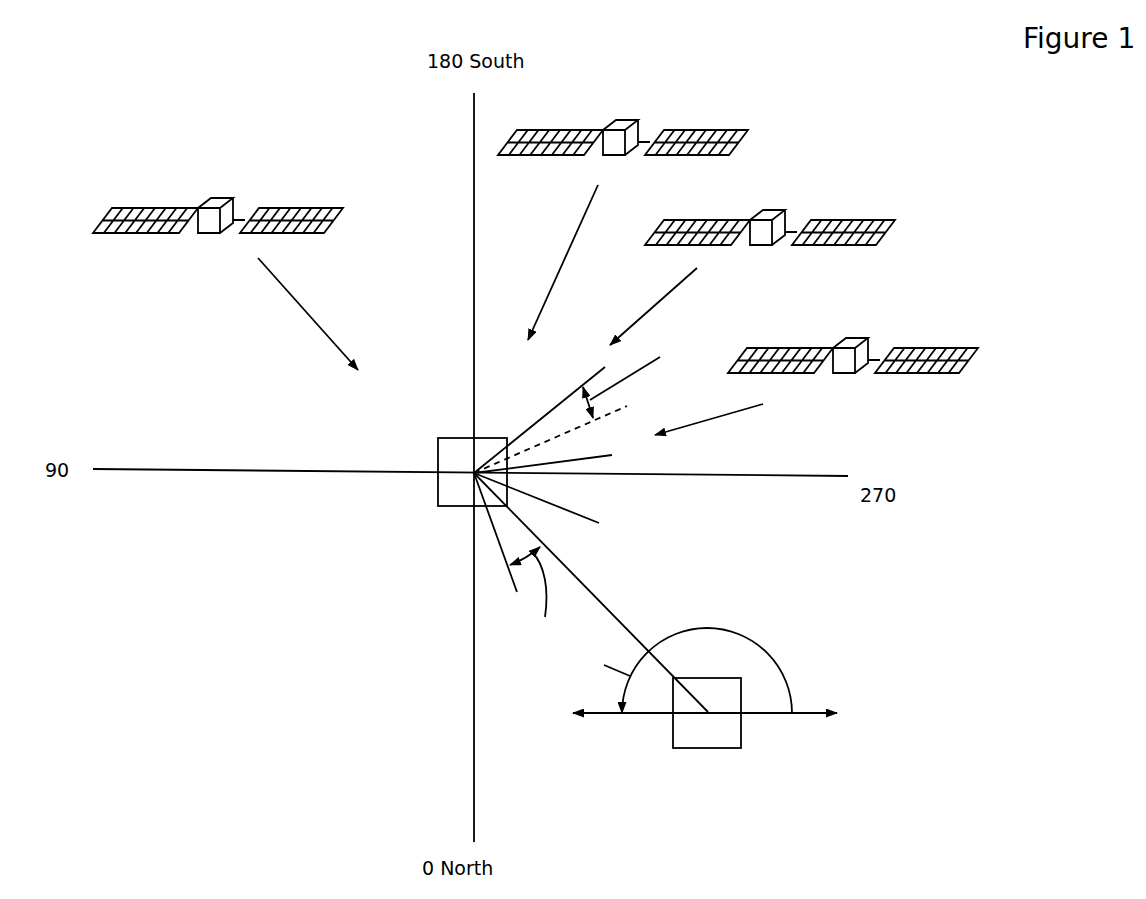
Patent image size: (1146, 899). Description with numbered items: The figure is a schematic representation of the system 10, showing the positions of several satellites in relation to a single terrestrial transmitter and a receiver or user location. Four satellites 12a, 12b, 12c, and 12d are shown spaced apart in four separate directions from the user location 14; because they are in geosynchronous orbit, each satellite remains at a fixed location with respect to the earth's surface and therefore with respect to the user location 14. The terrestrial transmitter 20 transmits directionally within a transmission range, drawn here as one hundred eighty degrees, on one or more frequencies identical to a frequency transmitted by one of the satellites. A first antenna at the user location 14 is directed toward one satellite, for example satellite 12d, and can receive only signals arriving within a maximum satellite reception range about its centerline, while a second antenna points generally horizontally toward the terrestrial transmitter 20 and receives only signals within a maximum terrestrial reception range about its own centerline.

The system 10 is at (465, 467).
The satellite 12a is at (225, 262).
The satellite 12b is at (623, 216).
The satellite 12c is at (752, 263).
The satellite 12d is at (819, 375).
The user location 14 is at (438, 490).
The terrestrial transmitter 20 is at (672, 737).